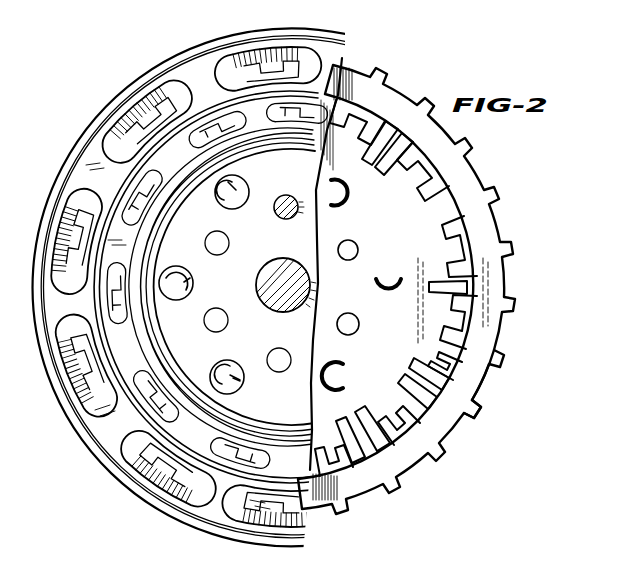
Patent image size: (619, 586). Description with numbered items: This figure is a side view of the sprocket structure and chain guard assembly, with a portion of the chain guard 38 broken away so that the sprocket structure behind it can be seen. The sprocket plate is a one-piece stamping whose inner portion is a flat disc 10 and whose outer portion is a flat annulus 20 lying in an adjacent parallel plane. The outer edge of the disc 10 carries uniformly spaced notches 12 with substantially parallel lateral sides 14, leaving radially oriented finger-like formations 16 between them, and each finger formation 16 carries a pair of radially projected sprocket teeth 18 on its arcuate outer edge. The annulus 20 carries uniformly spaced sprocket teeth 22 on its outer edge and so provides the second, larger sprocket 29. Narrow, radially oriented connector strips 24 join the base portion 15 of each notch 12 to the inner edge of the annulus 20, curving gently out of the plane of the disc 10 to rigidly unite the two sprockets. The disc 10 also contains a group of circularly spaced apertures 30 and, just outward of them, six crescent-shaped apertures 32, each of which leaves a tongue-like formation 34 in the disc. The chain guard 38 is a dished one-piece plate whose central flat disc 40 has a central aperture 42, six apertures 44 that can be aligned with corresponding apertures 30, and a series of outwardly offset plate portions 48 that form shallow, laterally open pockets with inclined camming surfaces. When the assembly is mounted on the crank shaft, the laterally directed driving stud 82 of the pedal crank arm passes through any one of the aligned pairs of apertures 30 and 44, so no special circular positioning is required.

The flat disc 10 is at (386, 226).
The notches 12 is at (416, 358).
The lateral sides 14 is at (428, 203).
The base portion 15 is at (381, 185).
The finger-like formations 16 is at (455, 258).
The sprocket teeth 18 is at (458, 333).
The flat annulus 20 is at (465, 386).
The sprocket teeth 22 is at (477, 418).
The connector strips 24 is at (402, 386).
The second sprocket 29 is at (418, 95).
The apertures 30 is at (347, 262).
The crescent-shaped apertures 32 is at (390, 306).
The tongue-like formation 34 is at (389, 279).
The chain guard 38 is at (173, 48).
The flat disc 40 is at (190, 232).
The central aperture 42 is at (276, 262).
The apertures 44 is at (222, 270).
The offset plate portions 48 is at (214, 368).
The driving stud 82 is at (284, 196).